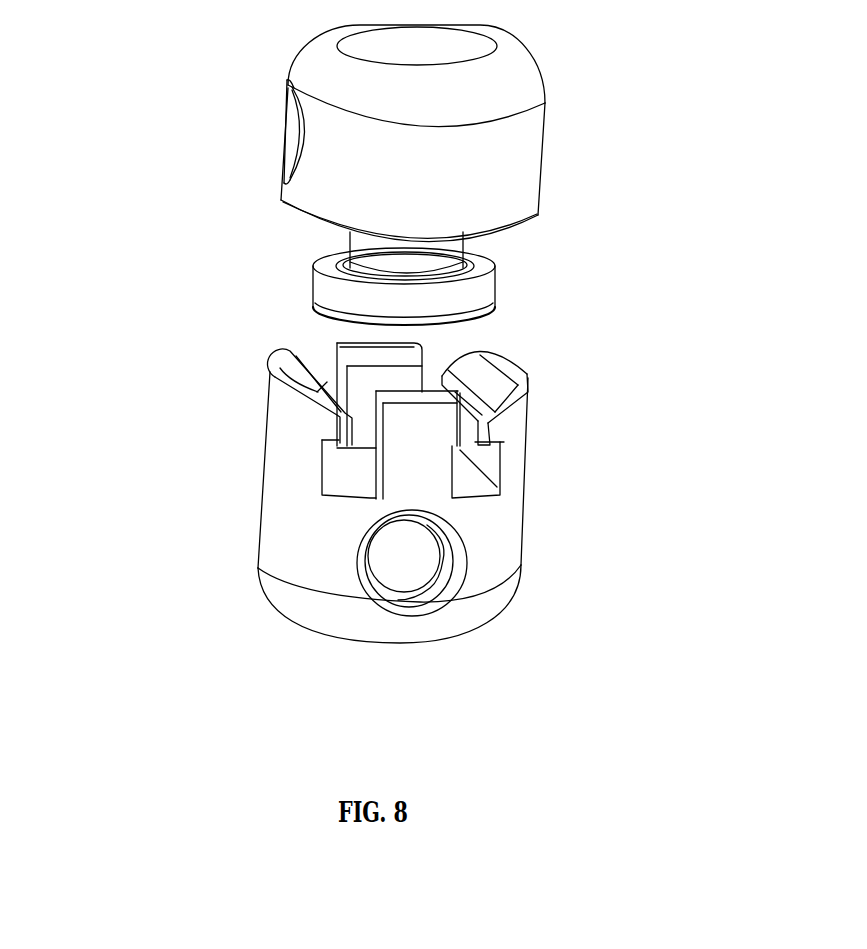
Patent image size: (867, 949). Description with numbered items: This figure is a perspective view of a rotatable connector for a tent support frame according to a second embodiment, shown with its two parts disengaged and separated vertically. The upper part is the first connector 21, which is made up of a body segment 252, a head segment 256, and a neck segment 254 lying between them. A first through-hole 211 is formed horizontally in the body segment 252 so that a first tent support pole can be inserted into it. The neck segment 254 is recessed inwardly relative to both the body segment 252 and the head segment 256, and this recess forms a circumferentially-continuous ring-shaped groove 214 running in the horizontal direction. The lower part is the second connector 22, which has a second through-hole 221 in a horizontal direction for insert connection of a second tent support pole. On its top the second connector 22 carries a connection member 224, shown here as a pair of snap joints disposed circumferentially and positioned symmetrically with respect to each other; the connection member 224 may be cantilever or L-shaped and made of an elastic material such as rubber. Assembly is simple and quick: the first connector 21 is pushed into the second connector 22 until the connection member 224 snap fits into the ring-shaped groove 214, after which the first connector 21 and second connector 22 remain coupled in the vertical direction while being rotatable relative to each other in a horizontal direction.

The first connector 21 is at (337, 197).
The body segment 252 is at (337, 73).
The first through-hole 211 is at (297, 142).
The neck segment 254 is at (370, 243).
The head segment 256 is at (320, 288).
The ring-shaped groove 214 is at (467, 256).
The second connector 22 is at (285, 537).
The connection member 224 is at (513, 396).
The second through-hole 221 is at (445, 572).